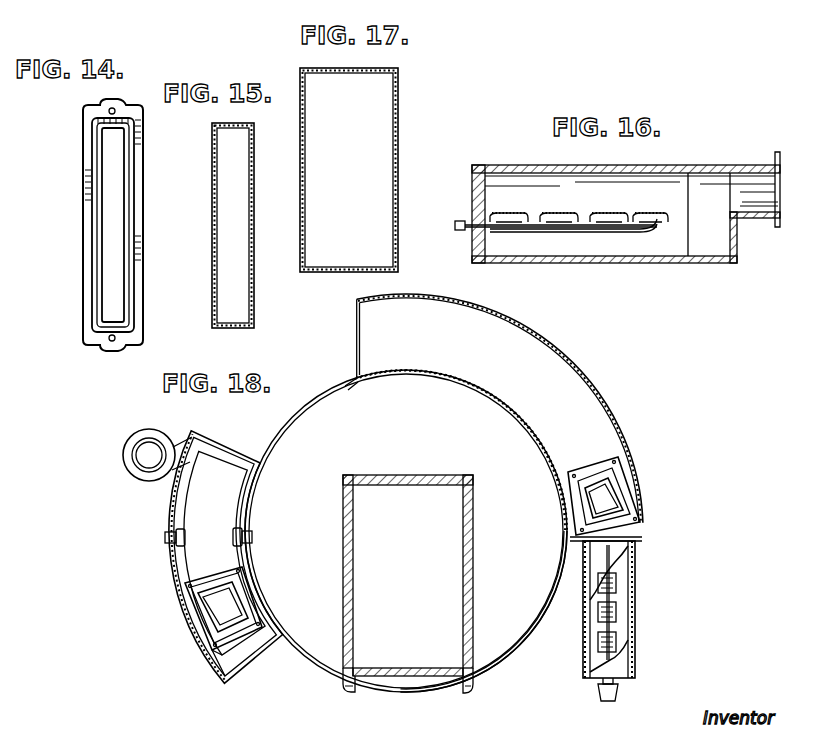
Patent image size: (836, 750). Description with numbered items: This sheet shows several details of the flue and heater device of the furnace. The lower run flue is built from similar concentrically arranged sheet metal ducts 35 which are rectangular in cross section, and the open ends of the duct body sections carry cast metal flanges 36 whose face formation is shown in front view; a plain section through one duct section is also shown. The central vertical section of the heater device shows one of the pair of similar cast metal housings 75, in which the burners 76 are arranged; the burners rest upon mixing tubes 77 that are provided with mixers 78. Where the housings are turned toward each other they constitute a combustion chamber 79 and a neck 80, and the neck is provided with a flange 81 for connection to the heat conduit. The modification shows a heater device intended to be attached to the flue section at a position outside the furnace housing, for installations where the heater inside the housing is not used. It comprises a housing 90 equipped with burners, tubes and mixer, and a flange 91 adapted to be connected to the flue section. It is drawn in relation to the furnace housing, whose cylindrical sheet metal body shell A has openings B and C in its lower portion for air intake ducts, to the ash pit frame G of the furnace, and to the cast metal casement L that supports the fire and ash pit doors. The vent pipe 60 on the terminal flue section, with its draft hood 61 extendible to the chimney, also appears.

In FIG. 14, the flange 36 is at (143, 213).
In FIG. 15, the sheet metal duct 35 is at (253, 251).
In FIG. 16, the cast metal housing 75 is at (521, 165).
In FIG. 16, the burner 76 is at (618, 214).
In FIG. 16, the mixing tube 77 is at (582, 233).
In FIG. 16, the mixer 78 is at (460, 236).
In FIG. 18, the mixer 78 is at (620, 692).
In FIG. 16, the combustion chamber 79 is at (705, 185).
In FIG. 16, the neck 80 is at (755, 227).
In FIG. 16, the flange 81 is at (777, 236).
In FIG. 18, the draft hood 61 is at (133, 474).
In FIG. 18, the vent pipe 60 is at (170, 482).
In FIG. 18, the housing 90 is at (636, 606).
In FIG. 18, the flange 91 is at (632, 490).
In FIG. 18, the body shell A is at (262, 492).
In FIG. 18, the opening B is at (553, 604).
In FIG. 18, the opening C is at (287, 437).
In FIG. 18, the ash pit frame G is at (343, 566).
In FIG. 18, the casement L is at (358, 682).